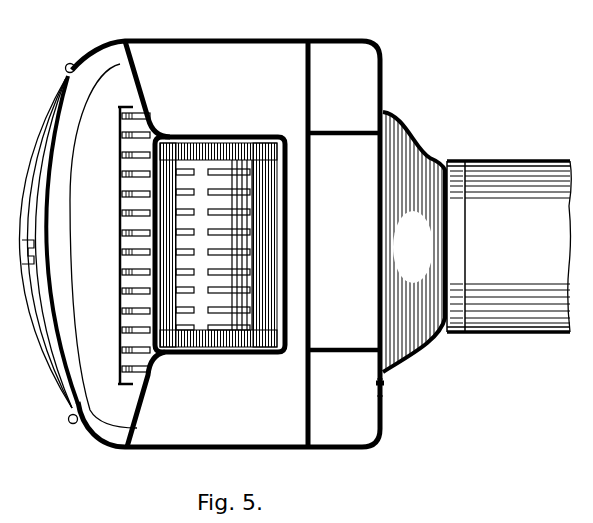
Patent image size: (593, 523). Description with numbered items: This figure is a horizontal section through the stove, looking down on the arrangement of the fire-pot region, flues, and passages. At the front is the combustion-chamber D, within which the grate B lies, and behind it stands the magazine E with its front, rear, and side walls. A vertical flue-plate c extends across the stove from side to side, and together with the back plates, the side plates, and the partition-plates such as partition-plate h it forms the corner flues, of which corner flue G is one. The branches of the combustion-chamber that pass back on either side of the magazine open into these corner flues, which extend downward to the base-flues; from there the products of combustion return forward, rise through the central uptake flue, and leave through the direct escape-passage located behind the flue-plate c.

The magazine E is at (240, 340).
The grate B is at (185, 245).
The combustion-chamber D is at (78, 246).
The corner flue G is at (353, 419).
The partition-plate h is at (344, 338).
The vertical flue-plate c is at (309, 245).